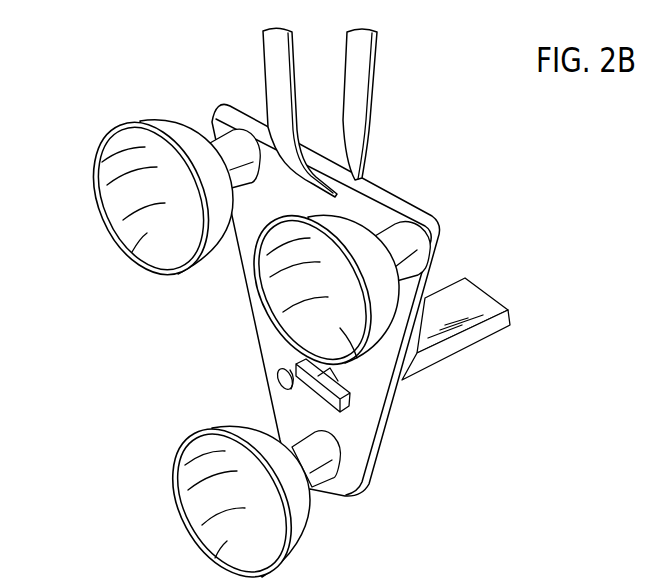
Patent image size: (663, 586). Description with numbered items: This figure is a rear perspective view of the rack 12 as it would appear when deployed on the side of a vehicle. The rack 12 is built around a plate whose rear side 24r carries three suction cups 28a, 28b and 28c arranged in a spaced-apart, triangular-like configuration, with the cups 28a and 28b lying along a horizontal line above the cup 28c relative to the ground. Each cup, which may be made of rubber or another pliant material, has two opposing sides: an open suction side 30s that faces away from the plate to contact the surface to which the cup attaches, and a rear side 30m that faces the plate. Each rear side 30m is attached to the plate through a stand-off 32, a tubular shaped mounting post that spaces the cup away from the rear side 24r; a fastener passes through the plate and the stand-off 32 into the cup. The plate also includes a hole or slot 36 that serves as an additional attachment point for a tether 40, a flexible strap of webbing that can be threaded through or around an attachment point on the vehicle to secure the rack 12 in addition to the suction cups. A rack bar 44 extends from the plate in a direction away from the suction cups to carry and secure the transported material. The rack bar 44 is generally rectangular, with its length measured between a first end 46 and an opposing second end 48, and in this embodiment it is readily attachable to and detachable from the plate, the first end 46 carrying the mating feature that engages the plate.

The rack 12 is at (473, 128).
The rear side of the plate 24r is at (358, 425).
The suction cup 28a is at (362, 373).
The suction cup 28b is at (107, 138).
The suction cup 28c is at (182, 445).
The rear side of the cup 30m is at (179, 145).
The open suction side of the cup 30s is at (150, 232).
The stand-off 32 is at (235, 152).
The hole or slot 36 is at (279, 372).
The tether 40 is at (278, 62).
The rack bar 44 is at (460, 297).
The first end of the rack bar 46 is at (318, 400).
The second end of the rack bar 48 is at (498, 307).